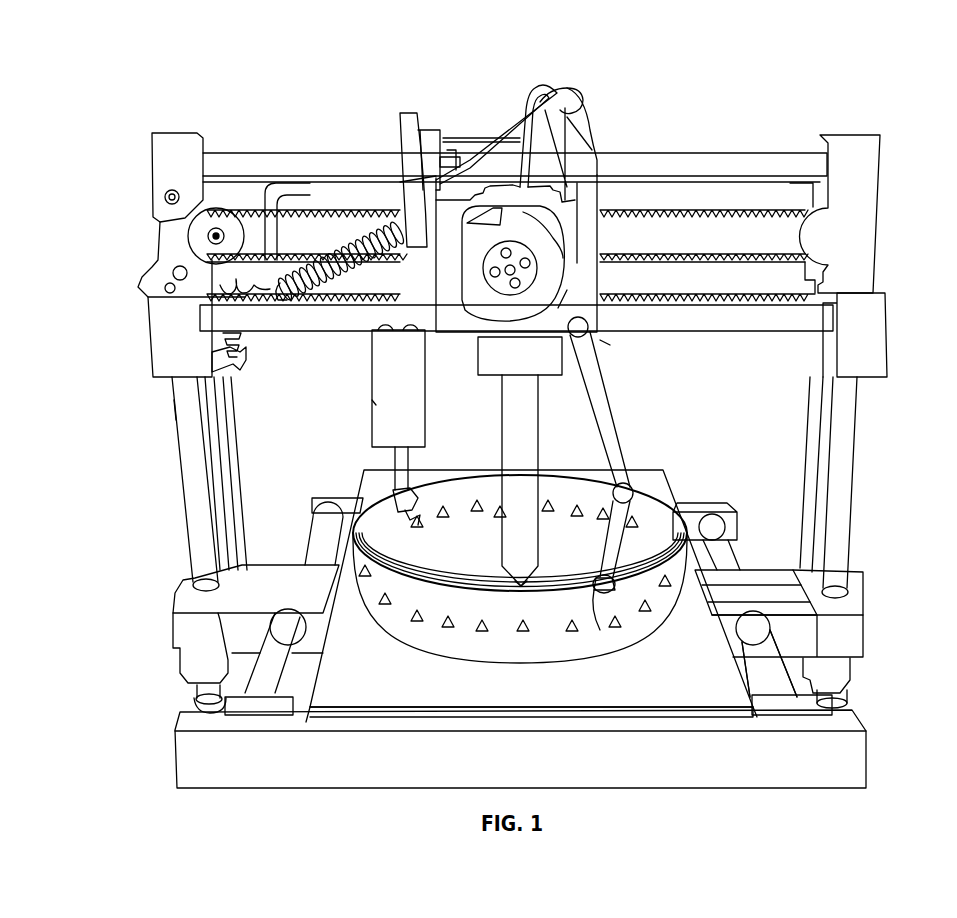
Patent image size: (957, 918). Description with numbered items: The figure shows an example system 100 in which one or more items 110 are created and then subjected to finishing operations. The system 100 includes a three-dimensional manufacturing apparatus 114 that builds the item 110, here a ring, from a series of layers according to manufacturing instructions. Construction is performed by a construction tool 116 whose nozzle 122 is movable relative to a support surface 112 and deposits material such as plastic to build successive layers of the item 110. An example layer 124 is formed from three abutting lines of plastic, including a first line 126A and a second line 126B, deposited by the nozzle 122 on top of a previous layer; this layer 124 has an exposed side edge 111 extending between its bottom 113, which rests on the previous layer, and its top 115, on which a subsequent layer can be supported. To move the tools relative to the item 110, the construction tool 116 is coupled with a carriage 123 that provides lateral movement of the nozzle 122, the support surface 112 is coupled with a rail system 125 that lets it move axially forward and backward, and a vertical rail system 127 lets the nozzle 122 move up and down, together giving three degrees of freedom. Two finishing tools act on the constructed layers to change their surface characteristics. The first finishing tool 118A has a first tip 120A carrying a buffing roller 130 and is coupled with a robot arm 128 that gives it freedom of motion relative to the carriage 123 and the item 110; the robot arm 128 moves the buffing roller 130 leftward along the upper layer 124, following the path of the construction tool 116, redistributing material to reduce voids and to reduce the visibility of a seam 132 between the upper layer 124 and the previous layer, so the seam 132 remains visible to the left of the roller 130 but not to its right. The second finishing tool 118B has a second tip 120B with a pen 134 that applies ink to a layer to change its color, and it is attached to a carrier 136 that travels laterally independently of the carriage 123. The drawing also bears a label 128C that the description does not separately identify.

The system 100 is at (757, 108).
The item 110 is at (405, 653).
The exposed side edge 111 is at (547, 594).
The support surface 112 is at (313, 697).
The bottom 113 is at (556, 592).
The manufacturing apparatus 114 is at (887, 161).
The top 115 is at (583, 592).
The construction tool 116 is at (478, 425).
The first finishing tool 118A is at (636, 414).
The second finishing tool 118B is at (338, 388).
The first tip 120A is at (617, 590).
The second tip 120B is at (412, 481).
The nozzle 122 is at (533, 562).
The carriage 123 is at (600, 166).
The example layer 124 is at (524, 592).
The rail system 125 is at (257, 677).
The first line 126A is at (667, 527).
The second line 126B is at (675, 527).
The vertical rail system 127 is at (198, 543).
The robot arm 128 is at (602, 375).
The lower link 128C is at (682, 527).
The buffing roller 130 is at (609, 592).
The seam 132 is at (599, 592).
The pen 134 is at (402, 512).
The carrier 136 is at (372, 410).